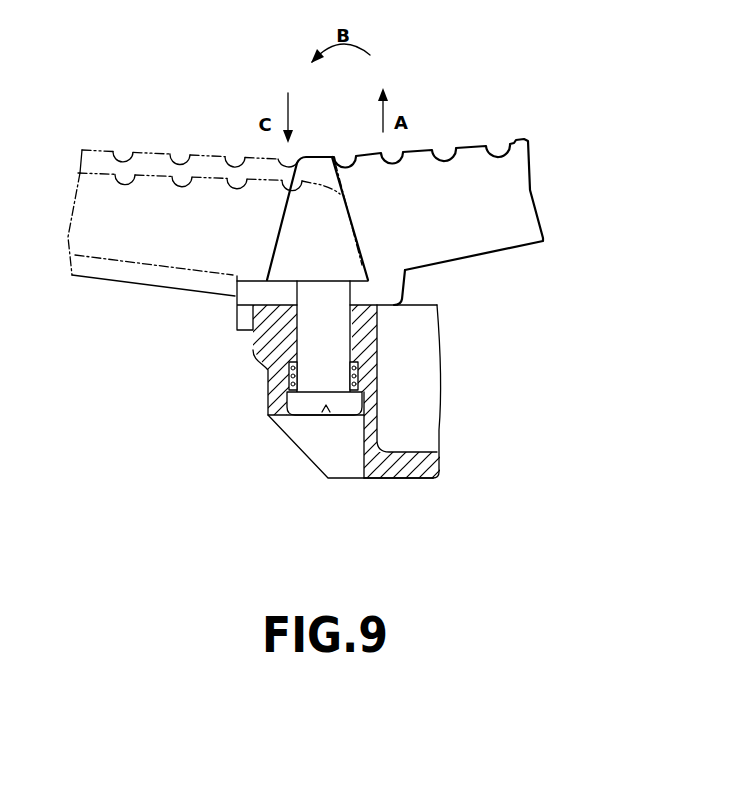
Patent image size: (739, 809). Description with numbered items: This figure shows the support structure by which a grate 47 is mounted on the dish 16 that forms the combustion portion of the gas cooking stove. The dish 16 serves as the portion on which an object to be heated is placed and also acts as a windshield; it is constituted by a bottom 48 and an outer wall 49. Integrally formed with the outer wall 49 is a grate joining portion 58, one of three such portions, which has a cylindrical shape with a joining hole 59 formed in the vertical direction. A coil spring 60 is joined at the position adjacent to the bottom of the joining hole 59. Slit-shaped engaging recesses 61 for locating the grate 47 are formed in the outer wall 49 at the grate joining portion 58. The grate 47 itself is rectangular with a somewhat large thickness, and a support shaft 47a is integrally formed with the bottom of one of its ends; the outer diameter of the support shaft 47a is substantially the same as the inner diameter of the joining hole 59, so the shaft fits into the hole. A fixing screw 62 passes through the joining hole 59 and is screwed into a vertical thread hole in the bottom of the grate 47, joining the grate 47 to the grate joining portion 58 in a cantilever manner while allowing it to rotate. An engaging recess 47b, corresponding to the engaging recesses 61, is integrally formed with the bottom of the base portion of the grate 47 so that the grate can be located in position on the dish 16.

The grate 47 is at (507, 192).
The support shaft 47a is at (310, 385).
The engaging recess 47b is at (388, 287).
The dish 16 is at (422, 438).
The bottom 48 is at (420, 473).
The outer wall 49 is at (370, 378).
The grate joining portion 58 is at (273, 357).
The joining hole 59 is at (337, 330).
The coil spring 60 is at (287, 372).
The engaging recess 61 is at (282, 325).
The fixing screw 62 is at (315, 408).